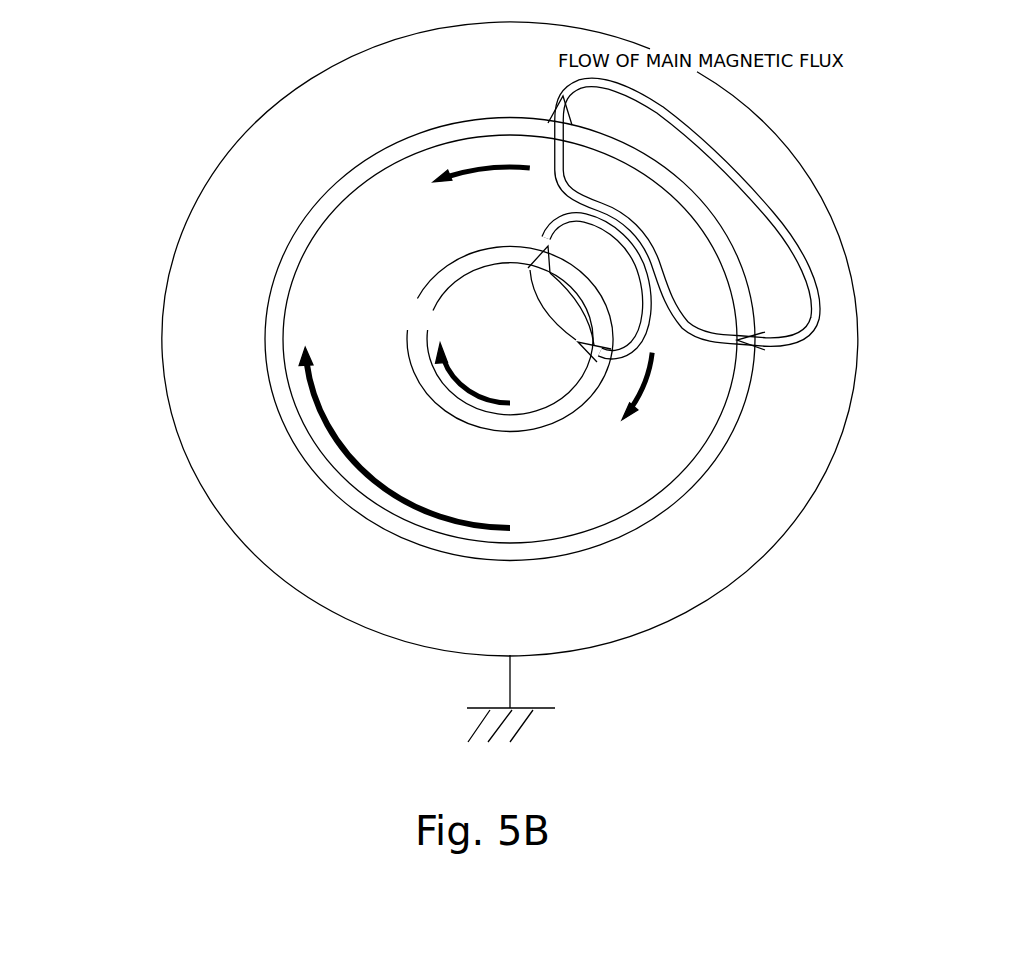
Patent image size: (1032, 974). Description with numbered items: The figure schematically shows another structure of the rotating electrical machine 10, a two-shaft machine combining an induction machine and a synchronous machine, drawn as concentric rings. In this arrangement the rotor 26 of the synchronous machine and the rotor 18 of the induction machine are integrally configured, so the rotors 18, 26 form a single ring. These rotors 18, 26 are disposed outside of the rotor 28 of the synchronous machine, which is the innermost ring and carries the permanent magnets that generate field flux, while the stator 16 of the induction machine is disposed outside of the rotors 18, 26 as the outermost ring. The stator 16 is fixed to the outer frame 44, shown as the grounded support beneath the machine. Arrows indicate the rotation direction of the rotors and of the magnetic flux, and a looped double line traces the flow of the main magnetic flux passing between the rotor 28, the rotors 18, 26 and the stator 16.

The rotating electrical machine 10 is at (449, 385).
The stator 16 is at (712, 560).
The rotor 18 is at (397, 339).
The rotor 26 is at (320, 303).
The rotor 28 is at (470, 337).
The outer frame 44 is at (547, 707).